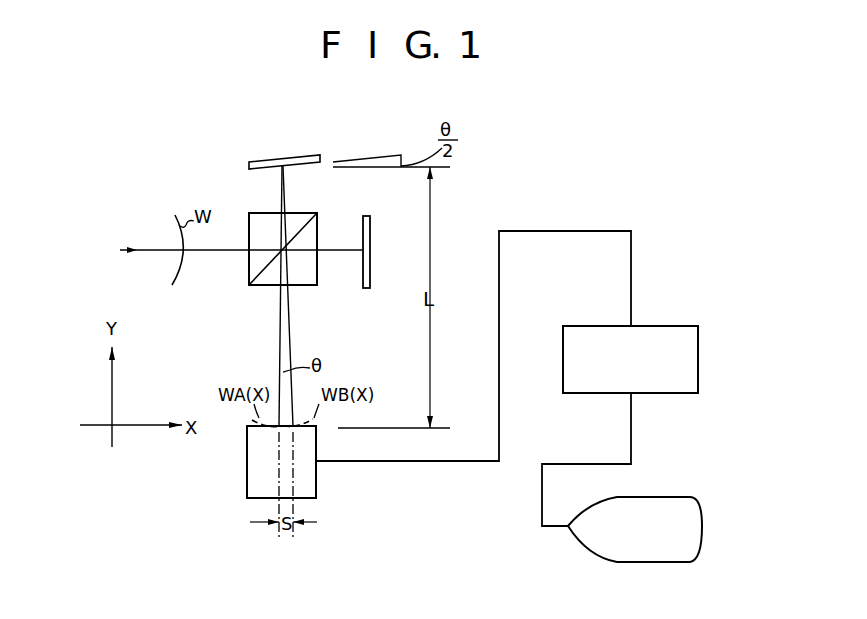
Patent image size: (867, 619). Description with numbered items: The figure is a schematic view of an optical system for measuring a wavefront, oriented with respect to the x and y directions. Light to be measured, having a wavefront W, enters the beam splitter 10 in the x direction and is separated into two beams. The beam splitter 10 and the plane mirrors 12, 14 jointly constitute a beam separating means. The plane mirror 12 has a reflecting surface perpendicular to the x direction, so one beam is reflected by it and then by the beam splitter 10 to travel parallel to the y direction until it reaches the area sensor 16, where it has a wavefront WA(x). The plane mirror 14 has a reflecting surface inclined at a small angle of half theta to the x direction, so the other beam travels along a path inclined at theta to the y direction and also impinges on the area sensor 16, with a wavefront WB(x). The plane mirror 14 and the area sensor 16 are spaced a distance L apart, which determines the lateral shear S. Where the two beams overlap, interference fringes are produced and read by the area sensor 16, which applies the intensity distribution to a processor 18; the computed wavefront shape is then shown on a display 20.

The beam splitter 10 is at (311, 282).
The plane mirror 12 is at (370, 283).
The plane mirror 14 is at (309, 158).
The area sensor 16 is at (310, 483).
The processor 18 is at (684, 327).
The display 20 is at (689, 500).